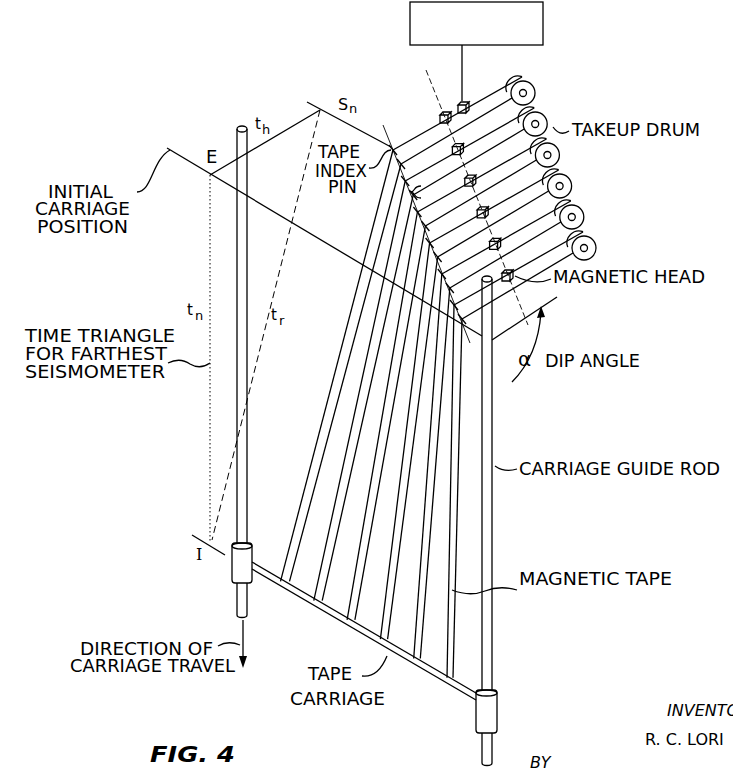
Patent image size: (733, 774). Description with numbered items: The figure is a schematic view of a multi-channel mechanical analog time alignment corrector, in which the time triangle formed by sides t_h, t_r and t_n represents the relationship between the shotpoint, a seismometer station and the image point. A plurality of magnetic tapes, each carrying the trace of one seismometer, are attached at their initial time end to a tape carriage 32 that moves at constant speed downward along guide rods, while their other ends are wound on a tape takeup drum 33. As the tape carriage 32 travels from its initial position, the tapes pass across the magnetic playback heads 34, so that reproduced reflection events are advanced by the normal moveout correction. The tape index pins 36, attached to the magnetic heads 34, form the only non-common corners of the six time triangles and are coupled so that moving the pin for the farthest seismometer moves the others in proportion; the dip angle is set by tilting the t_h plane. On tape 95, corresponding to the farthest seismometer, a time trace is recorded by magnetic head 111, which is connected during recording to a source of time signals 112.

The source of time signals 112 is at (540, 8).
The magnetic head 111 is at (467, 101).
The tape 95 is at (423, 130).
The tape index pins 36 is at (425, 203).
The tape takeup drum 33 is at (535, 91).
The magnetic playback heads 34 is at (460, 146).
The tape carriage 32 is at (432, 679).